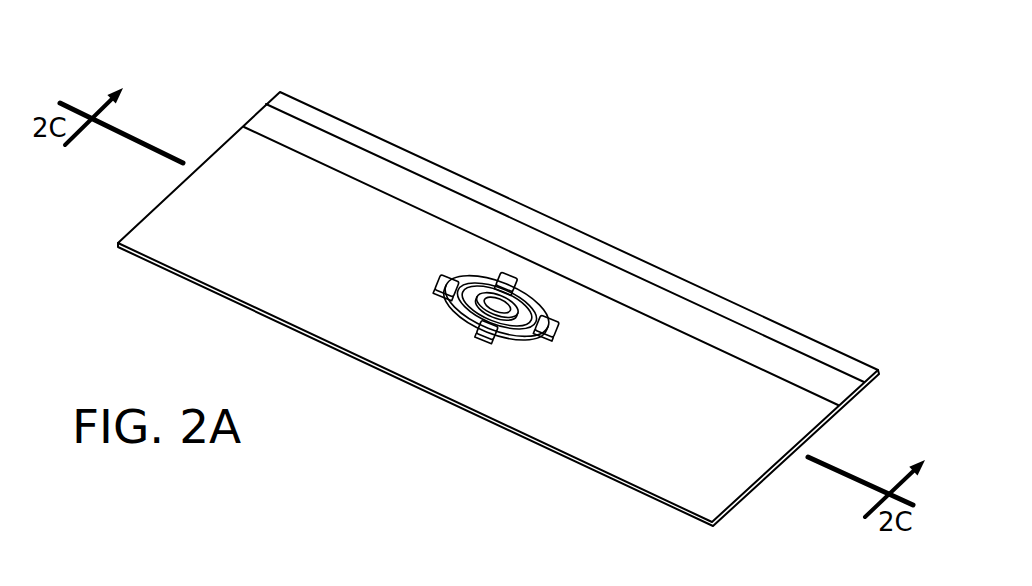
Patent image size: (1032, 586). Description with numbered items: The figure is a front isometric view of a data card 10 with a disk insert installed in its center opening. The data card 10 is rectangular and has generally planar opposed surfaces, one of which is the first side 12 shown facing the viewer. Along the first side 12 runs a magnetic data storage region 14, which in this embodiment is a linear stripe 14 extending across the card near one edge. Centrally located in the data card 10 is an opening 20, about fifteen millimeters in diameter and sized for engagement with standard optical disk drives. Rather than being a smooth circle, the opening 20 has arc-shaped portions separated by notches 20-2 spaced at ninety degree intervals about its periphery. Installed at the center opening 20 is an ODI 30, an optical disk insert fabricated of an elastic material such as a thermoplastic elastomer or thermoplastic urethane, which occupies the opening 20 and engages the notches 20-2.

The data card 10 is at (529, 110).
The first side 12 is at (163, 225).
The magnetic data storage region 14 is at (272, 118).
The opening 20 is at (495, 275).
The notches 20-2 is at (440, 276).
The ODI 30 is at (430, 315).